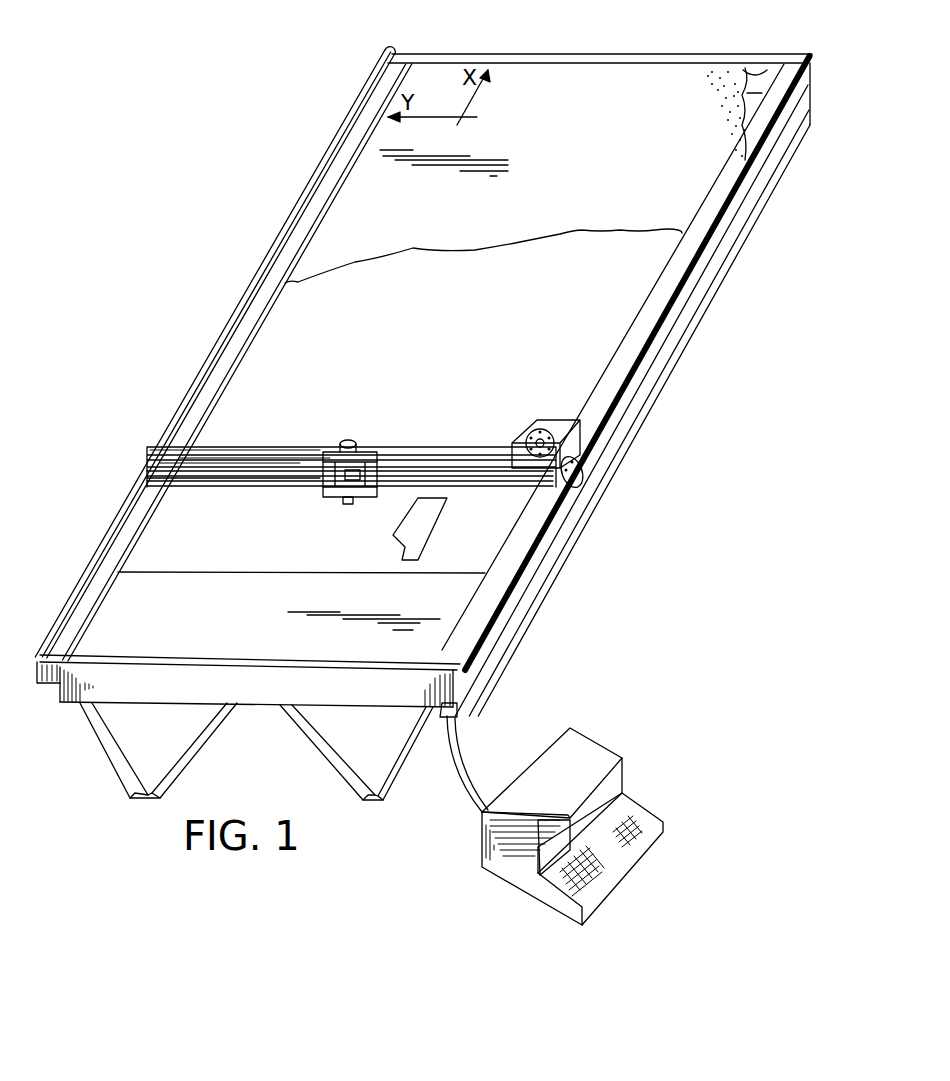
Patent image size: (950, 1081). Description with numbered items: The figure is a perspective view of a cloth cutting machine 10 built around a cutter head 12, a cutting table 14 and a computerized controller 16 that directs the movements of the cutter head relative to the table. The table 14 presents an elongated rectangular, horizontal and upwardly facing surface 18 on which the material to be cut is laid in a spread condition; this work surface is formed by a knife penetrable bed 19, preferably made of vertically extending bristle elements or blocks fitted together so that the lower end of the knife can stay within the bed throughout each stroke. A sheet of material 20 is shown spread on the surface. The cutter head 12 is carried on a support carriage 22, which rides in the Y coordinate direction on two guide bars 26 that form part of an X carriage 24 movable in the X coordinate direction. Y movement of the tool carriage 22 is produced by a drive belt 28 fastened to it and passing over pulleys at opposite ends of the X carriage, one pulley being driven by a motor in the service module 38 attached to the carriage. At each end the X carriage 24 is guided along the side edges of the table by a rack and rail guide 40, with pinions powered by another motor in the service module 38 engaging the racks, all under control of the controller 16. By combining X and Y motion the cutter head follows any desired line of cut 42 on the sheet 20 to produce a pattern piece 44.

The cloth cutting machine 10 is at (318, 132).
The cutter head 12 is at (325, 492).
The cutting table 14 is at (775, 143).
The computerized controller 16 is at (585, 755).
The upwardly facing surface 18 is at (597, 80).
The knife penetrable bed 19 is at (763, 70).
The sheet of material 20 is at (515, 260).
The support carriage 22 is at (356, 440).
The X carriage 24 is at (425, 455).
The guide bars 26 is at (458, 467).
The drive belt 28 is at (250, 478).
The service module 38 is at (527, 420).
The rack and rail guide 40 is at (228, 324).
The line of cut 42 is at (343, 503).
The pattern piece 44 is at (415, 528).